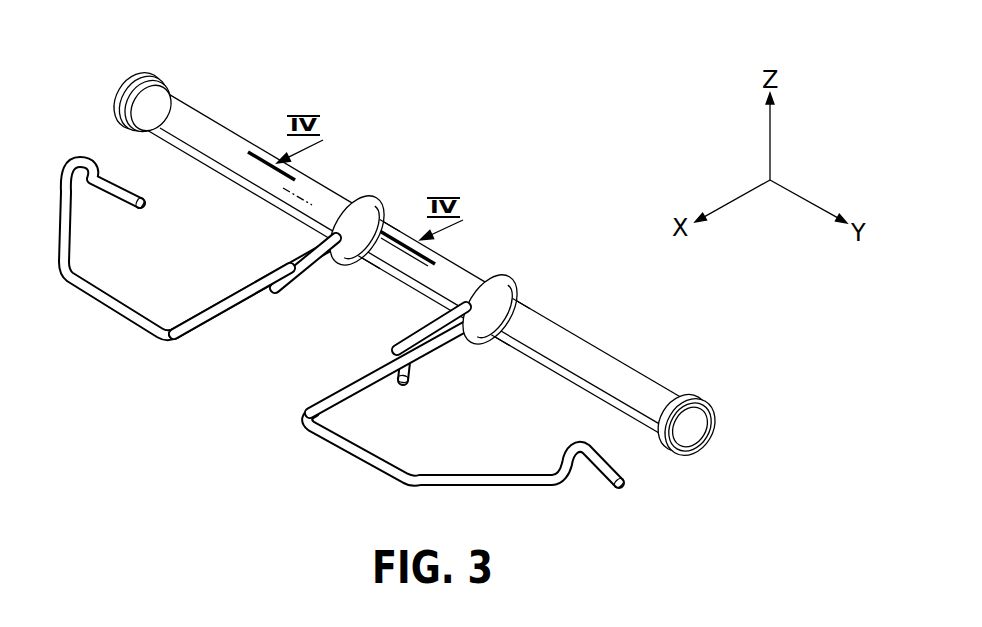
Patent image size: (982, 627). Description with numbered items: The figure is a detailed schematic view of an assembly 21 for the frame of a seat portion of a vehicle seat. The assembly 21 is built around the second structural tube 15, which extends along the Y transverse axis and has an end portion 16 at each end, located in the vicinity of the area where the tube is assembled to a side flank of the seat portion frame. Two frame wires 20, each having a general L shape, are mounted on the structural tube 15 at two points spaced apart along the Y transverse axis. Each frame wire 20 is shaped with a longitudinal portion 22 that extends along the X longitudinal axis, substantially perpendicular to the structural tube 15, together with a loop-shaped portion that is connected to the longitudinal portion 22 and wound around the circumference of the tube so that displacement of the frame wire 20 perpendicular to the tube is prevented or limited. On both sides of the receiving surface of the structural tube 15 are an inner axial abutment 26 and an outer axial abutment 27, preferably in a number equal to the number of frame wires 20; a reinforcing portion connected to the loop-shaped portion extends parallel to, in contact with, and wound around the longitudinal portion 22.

The second structural tube 15 is at (230, 143).
The end portion 16 is at (201, 80).
The frame wire 20 is at (100, 293).
The assembly 21 is at (489, 141).
The longitudinal portion 22 is at (223, 307).
The inner axial abutment 26 is at (385, 210).
The outer axial abutment 27 is at (341, 192).